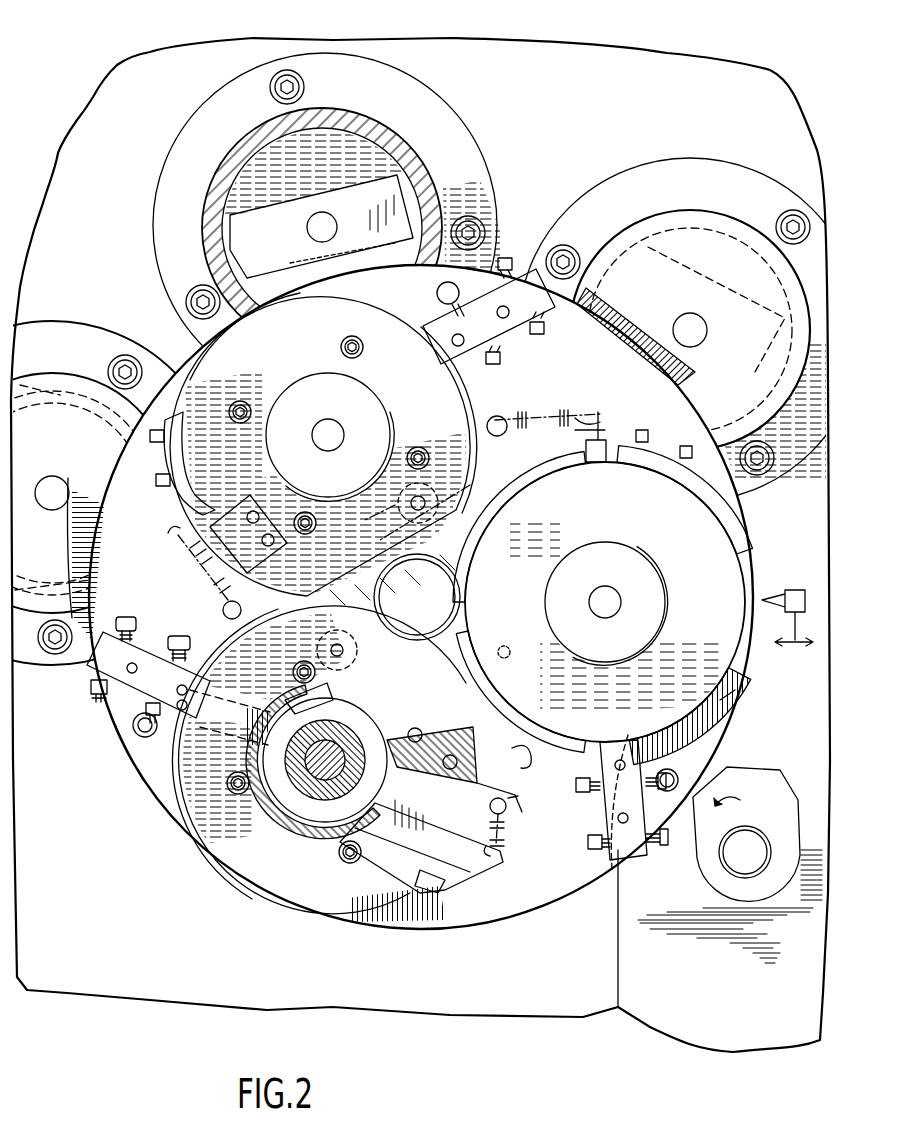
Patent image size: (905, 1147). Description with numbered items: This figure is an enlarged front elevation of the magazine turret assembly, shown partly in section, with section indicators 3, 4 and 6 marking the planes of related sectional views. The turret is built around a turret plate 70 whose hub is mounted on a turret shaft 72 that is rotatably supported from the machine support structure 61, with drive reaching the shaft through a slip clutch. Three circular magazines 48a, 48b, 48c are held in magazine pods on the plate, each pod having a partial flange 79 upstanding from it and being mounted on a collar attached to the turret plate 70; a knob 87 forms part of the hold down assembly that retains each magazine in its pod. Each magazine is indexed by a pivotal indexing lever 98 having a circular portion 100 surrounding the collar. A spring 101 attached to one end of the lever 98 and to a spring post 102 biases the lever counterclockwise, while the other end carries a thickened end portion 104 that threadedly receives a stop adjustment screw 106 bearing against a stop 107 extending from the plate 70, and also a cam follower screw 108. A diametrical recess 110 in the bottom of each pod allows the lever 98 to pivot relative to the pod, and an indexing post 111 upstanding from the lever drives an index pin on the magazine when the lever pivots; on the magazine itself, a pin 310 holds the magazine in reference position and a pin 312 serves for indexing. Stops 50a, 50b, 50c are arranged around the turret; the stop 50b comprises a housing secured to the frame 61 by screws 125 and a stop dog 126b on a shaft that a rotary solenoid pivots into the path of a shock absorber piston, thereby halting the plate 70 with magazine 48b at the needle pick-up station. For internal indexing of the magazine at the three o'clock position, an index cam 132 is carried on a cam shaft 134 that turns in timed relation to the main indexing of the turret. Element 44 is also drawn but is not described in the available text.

The section line 3- 3 is at (267, 322).
The section line 4- 4 is at (500, 437).
The section line 6- 6 is at (352, 53).
The probe 44 is at (799, 581).
The magazine 48a is at (318, 872).
The magazine 48b is at (707, 596).
The magazine 48c is at (404, 373).
The stop 50a is at (92, 314).
The stop 50b is at (478, 137).
The stop 50c is at (718, 158).
The machine support structure 61 is at (596, 109).
The turret plate 70 is at (518, 908).
The turret shaft 72 is at (392, 607).
The partial flange 79 is at (722, 703).
The knob 87 is at (318, 385).
The indexing lever 98 is at (607, 425).
The circular portion 100 is at (368, 720).
The spring 101 is at (518, 812).
The spring post 102 is at (514, 750).
The thickened end portion 104 is at (118, 688).
The stop adjustment screw 106 is at (186, 645).
The stop 107 is at (144, 740).
The cam follower screw 108 is at (145, 632).
The diametrical recess 110 is at (432, 865).
The indexing post 111 is at (183, 712).
The screws 125 is at (272, 86).
The stop dog 126b is at (365, 192).
The index cam 132 is at (752, 772).
The cam shaft 134 is at (758, 846).
The pin 310 is at (595, 442).
The pin 312 is at (617, 742).